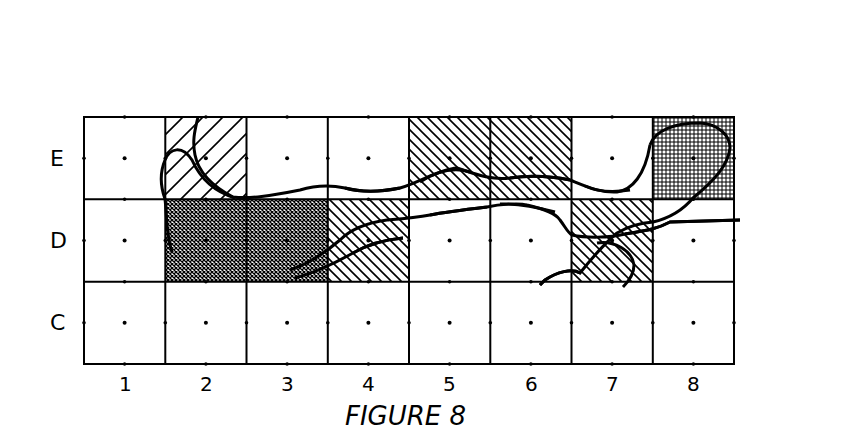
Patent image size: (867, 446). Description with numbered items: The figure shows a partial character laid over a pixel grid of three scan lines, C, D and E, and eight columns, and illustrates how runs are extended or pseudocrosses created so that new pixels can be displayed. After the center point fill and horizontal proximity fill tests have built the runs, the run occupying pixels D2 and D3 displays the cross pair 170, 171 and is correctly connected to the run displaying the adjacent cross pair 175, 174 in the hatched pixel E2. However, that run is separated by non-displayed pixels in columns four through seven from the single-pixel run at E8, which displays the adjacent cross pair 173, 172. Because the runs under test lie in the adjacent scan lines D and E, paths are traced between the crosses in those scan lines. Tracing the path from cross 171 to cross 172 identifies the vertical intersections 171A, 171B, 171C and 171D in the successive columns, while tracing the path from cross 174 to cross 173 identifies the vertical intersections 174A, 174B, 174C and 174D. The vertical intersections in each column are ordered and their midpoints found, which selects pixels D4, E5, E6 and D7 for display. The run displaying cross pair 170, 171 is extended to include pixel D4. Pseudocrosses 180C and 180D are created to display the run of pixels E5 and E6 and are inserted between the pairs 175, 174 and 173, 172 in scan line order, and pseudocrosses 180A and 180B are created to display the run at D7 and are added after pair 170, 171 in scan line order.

The cross 170 is at (168, 258).
The cross 171 is at (363, 283).
The vertical intersection 171A is at (403, 238).
The vertical intersection 171B is at (453, 215).
The vertical intersection 171C is at (533, 210).
The vertical intersection 171D is at (740, 220).
The cross 172 is at (732, 152).
The cross 173 is at (680, 124).
The cross 174 is at (198, 117).
The vertical intersection 174A is at (370, 190).
The vertical intersection 174B is at (457, 172).
The vertical intersection 174C is at (535, 177).
The vertical intersection 174D is at (608, 193).
The cross 175 is at (165, 158).
The pseudocross 180A is at (540, 284).
The pseudocross 180B is at (623, 286).
The pseudocross 180C is at (412, 120).
The pseudocross 180D is at (568, 120).